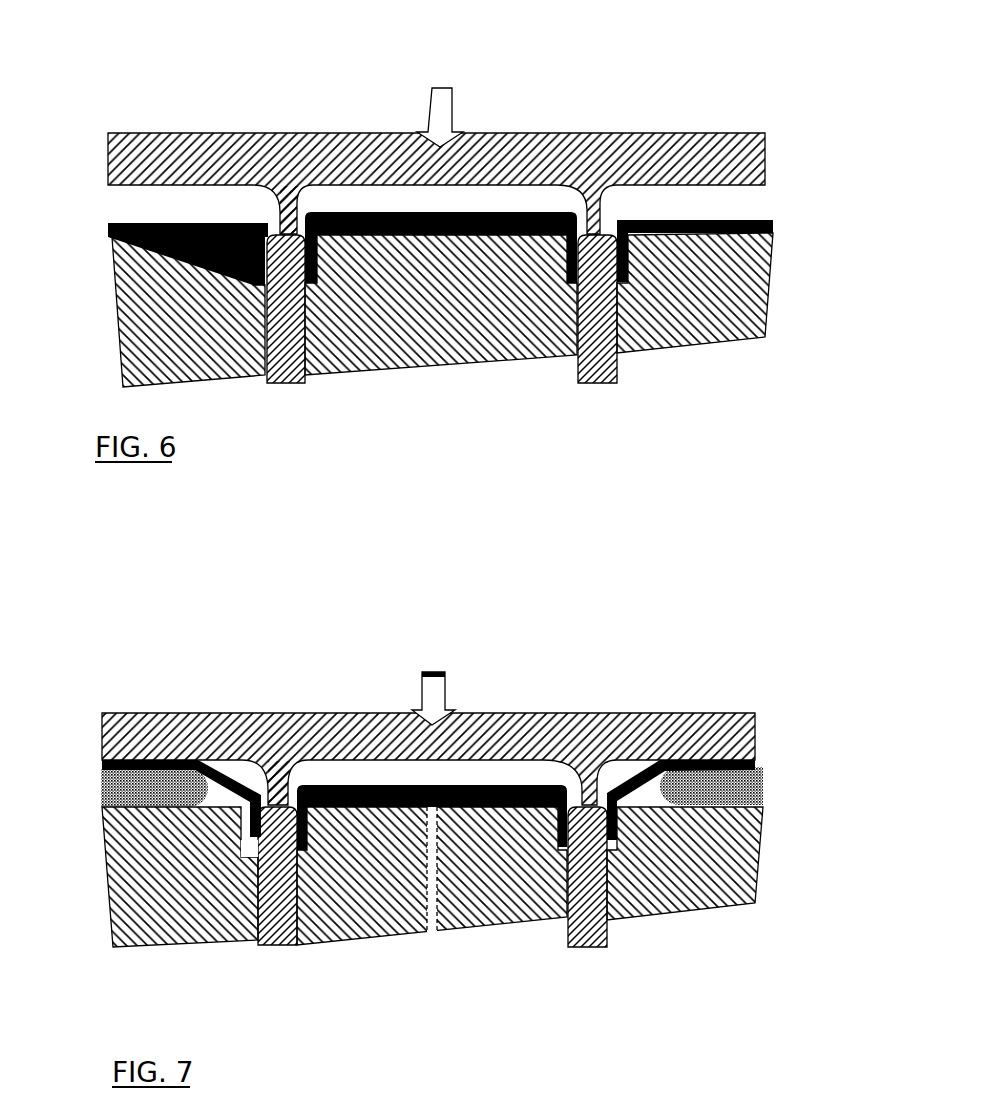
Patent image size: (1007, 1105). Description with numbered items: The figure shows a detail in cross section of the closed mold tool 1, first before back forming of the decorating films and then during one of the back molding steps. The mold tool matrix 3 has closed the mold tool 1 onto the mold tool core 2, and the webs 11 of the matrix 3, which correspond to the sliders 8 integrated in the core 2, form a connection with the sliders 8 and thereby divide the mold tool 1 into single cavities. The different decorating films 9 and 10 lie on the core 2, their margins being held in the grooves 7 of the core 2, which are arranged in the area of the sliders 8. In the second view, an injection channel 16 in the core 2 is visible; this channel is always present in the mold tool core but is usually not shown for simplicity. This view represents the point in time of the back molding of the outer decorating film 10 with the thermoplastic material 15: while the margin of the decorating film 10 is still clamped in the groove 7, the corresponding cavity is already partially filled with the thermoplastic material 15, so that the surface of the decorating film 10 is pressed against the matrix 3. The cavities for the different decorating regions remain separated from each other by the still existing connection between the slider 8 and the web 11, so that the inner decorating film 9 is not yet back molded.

In FIG. 6, the mold tool 1 is at (430, 236).
In FIG. 6, the mold tool core 2 is at (517, 358).
In FIG. 7, the mold tool core 2 is at (494, 914).
In FIG. 6, the mold tool matrix 3 is at (357, 145).
In FIG. 7, the mold tool matrix 3 is at (353, 708).
In FIG. 7, the groove 7 is at (247, 861).
In FIG. 6, the slider 8 is at (615, 356).
In FIG. 7, the slider 8 is at (603, 909).
In FIG. 6, the decorating film 9 is at (495, 197).
In FIG. 7, the decorating film 9 is at (470, 787).
In FIG. 6, the outer decorating film 10 is at (745, 208).
In FIG. 7, the outer decorating film 10 is at (631, 758).
In FIG. 6, the web 11 is at (270, 208).
In FIG. 7, the web 11 is at (268, 793).
In FIG. 7, the thermoplastic material 15 is at (132, 763).
In FIG. 7, the injection channel 16 is at (428, 870).